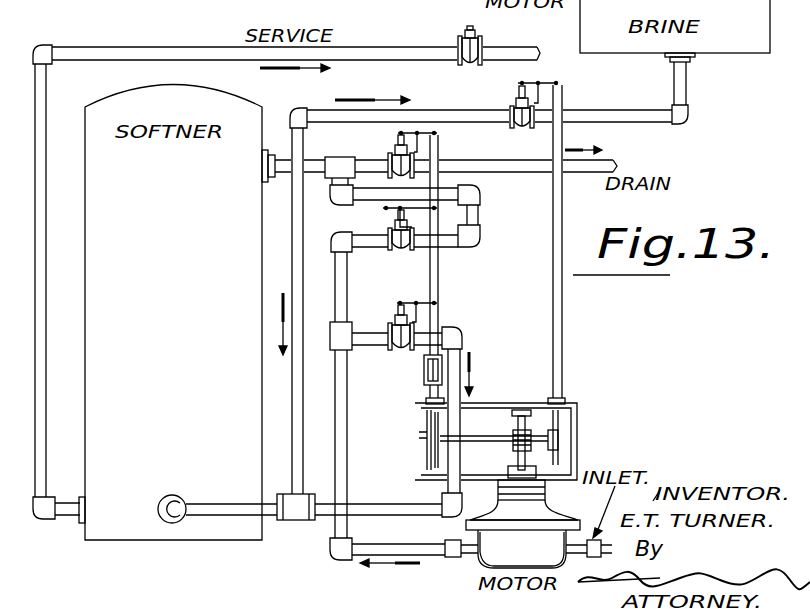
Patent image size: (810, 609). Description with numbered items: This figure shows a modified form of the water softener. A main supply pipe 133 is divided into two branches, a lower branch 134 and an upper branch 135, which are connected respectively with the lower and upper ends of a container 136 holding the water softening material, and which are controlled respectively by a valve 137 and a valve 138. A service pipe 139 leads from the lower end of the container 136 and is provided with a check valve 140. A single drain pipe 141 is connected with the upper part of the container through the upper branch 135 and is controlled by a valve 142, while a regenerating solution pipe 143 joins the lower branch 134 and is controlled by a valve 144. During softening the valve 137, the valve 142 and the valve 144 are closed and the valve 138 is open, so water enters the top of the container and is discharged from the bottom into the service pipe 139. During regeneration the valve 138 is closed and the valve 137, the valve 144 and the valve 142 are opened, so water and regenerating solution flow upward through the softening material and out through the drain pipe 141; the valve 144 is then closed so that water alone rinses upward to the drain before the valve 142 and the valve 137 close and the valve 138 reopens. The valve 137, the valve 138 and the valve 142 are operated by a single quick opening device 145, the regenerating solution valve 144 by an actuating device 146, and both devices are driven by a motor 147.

The main supply pipe 133 is at (363, 549).
The lower branch 134 is at (387, 498).
The upper branch 135 is at (367, 216).
The container 136 is at (100, 300).
The valve 137 is at (402, 345).
The valve 138 is at (406, 245).
The service pipe 139 is at (65, 218).
The check valve 140 is at (463, 65).
The drain pipe 141 is at (539, 163).
The valve 142 is at (392, 163).
The regenerating solution pipe 143 is at (660, 115).
The valve 144 is at (527, 121).
The quick opening device 145 is at (424, 384).
The actuating device 146 is at (560, 431).
The motor 147 is at (522, 549).